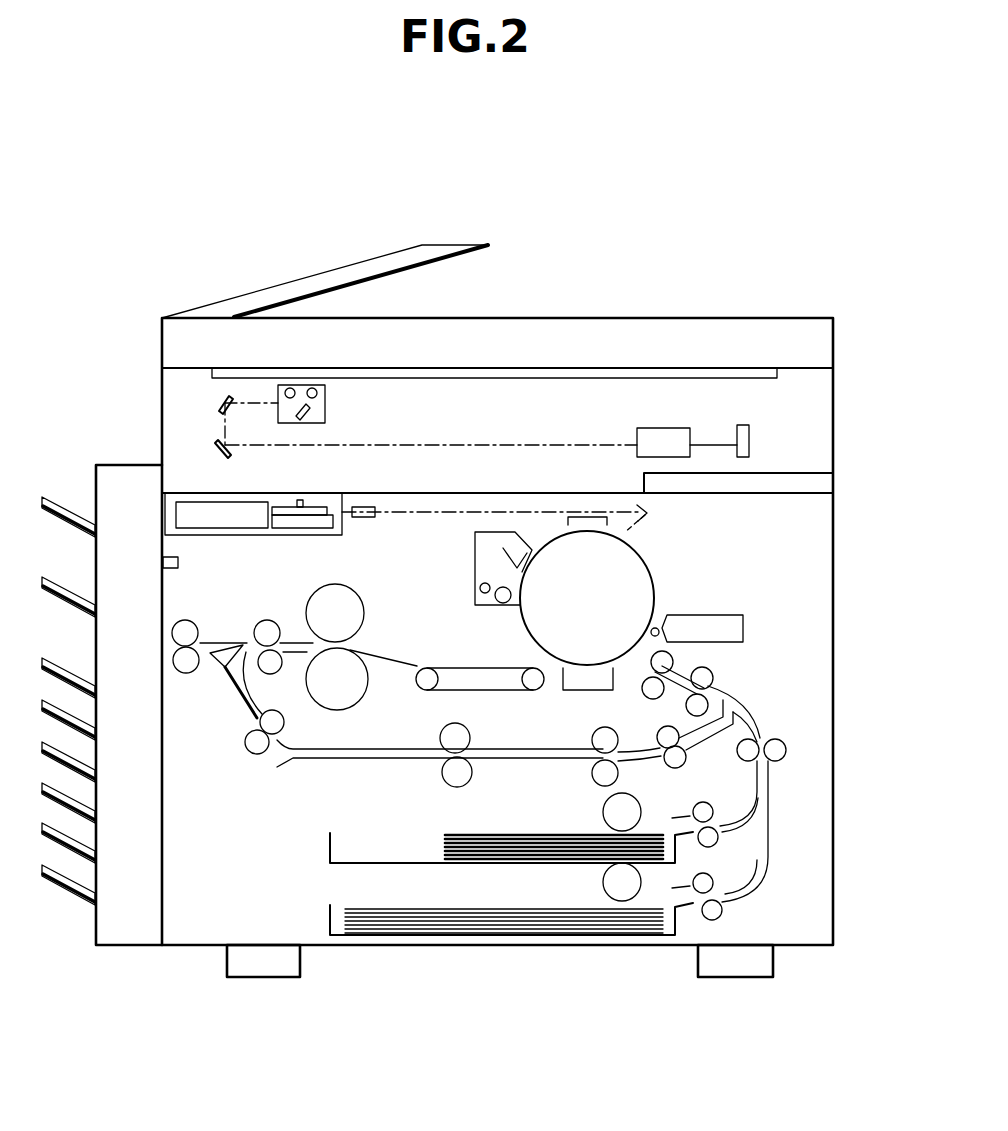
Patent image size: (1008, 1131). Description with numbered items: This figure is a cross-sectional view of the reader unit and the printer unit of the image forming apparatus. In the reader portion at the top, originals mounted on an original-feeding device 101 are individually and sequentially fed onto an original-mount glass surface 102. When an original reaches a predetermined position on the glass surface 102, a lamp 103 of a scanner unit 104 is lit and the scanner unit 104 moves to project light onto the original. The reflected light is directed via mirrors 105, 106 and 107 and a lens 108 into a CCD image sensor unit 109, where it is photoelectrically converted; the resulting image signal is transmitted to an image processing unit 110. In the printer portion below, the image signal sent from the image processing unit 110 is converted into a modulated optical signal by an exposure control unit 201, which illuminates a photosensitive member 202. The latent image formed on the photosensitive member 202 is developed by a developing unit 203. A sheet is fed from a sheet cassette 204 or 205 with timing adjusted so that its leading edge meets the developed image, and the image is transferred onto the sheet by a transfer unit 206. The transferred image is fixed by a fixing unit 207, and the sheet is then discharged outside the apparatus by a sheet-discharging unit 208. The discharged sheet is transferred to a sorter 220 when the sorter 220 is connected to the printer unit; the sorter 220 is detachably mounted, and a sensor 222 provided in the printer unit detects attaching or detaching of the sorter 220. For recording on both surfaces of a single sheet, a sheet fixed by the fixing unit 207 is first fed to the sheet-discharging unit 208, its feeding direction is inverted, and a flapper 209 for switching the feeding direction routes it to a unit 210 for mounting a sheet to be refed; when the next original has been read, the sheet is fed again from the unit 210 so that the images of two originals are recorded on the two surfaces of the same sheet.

The original-feeding device 101 is at (351, 266).
The original-mount glass surface 102 is at (610, 368).
The lamp 103 is at (308, 386).
The scanner unit 104 is at (322, 403).
The mirror 105 is at (345, 410).
The mirror 106 is at (225, 396).
The mirror 107 is at (213, 447).
The lens 108 is at (665, 428).
The CCD image sensor unit 109 is at (742, 425).
The image processing unit 110 is at (800, 482).
The exposure control unit 201 is at (275, 495).
The photosensitive member 202 is at (561, 540).
The developing unit 203 is at (743, 628).
The sheet cassette 204 is at (667, 855).
The sheet cassette 205 is at (670, 925).
The transfer unit 206 is at (587, 667).
The fixing unit 207 is at (358, 640).
The sheet-discharging unit 208 is at (177, 640).
The flapper 209 is at (212, 665).
The unit for mounting a sheet to be refed 210 is at (510, 758).
The sorter 220 is at (110, 922).
The sensor 222 is at (165, 557).